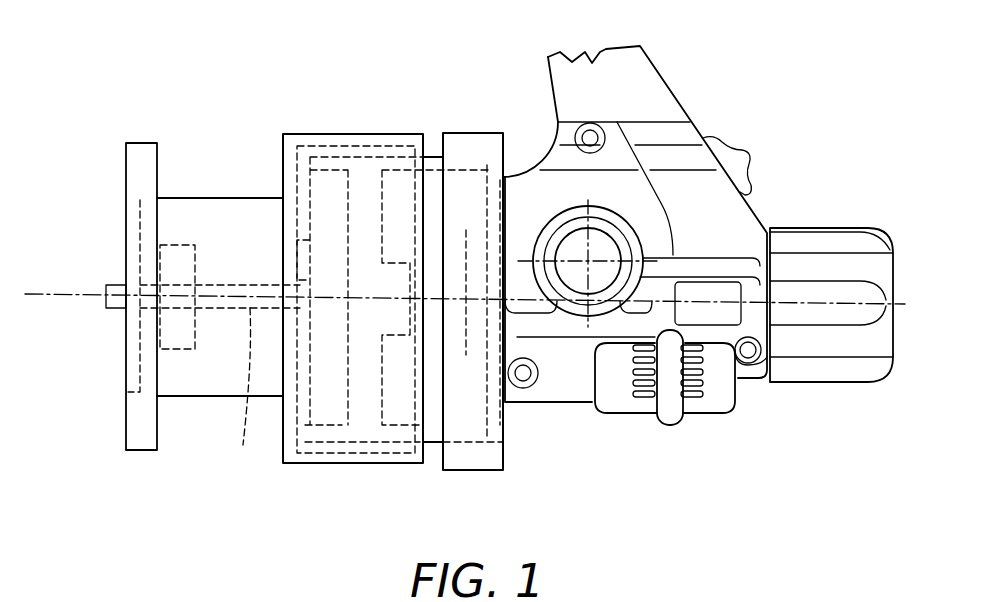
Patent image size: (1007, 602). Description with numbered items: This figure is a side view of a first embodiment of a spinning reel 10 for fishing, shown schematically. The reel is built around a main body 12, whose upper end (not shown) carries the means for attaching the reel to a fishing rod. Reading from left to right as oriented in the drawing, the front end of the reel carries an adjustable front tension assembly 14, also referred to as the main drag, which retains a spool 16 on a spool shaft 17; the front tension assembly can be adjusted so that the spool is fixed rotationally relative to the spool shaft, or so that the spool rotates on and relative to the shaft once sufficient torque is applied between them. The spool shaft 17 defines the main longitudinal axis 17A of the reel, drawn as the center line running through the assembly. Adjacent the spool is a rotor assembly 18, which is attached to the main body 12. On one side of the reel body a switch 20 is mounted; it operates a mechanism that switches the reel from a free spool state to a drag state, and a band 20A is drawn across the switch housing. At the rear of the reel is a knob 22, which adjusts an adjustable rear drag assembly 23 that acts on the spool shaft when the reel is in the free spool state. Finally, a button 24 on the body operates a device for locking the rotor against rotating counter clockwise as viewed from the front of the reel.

The spinning reel 10 is at (230, 92).
The main body 12 is at (537, 187).
The adjustable front tension assembly 14 is at (100, 355).
The spool 16 is at (218, 380).
The spool shaft 17 is at (244, 391).
The main longitudinal axis 17A is at (45, 295).
The rotor assembly 18 is at (365, 463).
The switch 20 is at (622, 402).
The clamp band 20A is at (672, 413).
The knob 22 is at (880, 342).
The adjustable rear drag assembly 23 is at (820, 388).
The button 24 is at (750, 162).